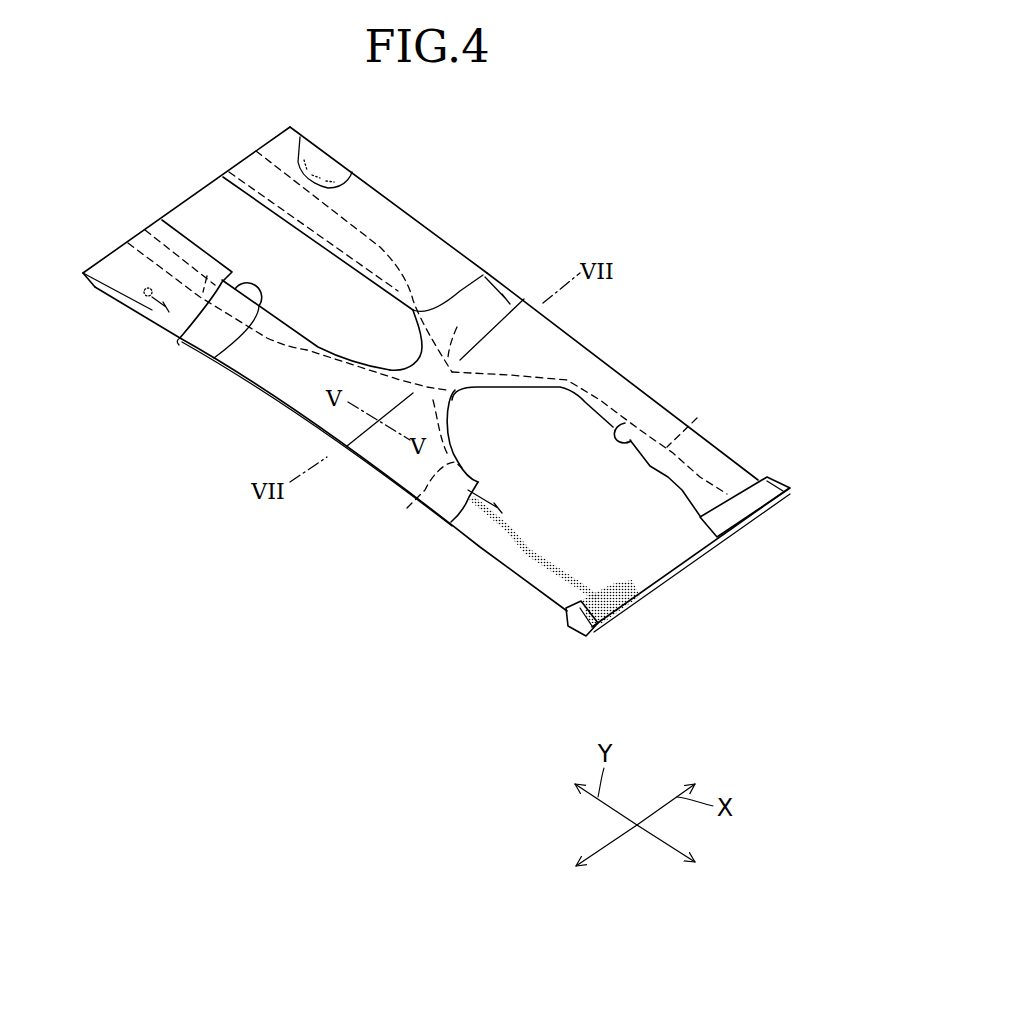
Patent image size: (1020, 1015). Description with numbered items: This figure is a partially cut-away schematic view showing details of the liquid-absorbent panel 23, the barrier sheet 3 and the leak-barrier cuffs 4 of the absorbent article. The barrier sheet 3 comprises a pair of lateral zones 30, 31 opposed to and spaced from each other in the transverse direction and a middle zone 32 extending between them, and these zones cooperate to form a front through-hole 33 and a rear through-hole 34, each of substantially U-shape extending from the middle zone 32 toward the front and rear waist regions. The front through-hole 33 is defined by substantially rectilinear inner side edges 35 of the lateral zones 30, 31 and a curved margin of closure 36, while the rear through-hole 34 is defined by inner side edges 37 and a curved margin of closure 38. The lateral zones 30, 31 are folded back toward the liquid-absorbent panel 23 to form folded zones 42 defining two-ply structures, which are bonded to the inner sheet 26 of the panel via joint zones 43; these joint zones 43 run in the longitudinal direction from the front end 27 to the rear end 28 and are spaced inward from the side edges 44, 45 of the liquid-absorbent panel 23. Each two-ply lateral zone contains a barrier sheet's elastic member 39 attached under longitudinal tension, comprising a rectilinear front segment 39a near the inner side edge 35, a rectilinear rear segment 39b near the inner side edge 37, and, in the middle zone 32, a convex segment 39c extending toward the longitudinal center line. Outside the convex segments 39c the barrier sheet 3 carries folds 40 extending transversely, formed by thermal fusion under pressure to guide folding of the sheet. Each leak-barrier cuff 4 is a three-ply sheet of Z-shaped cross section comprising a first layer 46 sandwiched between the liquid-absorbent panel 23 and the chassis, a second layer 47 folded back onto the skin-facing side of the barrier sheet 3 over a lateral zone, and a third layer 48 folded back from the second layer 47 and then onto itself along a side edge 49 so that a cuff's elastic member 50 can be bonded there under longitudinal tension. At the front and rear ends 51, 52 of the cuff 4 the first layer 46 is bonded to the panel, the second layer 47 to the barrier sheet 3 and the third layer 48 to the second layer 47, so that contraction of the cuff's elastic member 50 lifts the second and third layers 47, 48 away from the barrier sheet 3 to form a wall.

The barrier sheet 3 is at (295, 333).
The leak-barrier cuff 4 is at (260, 138).
The liquid-absorbent panel 23 is at (671, 602).
The inner sheet 26 is at (530, 573).
The front end 27 is at (737, 523).
The rear end 28 is at (250, 153).
The lateral zone 30 is at (236, 362).
The lateral zone 31 is at (564, 345).
The middle zone 32 is at (421, 385).
The front through-hole 33 is at (662, 532).
The rear through-hole 34 is at (218, 215).
The inner side edge 35 is at (620, 424).
The curved margin of closure 36 is at (507, 386).
The inner side edge 37 is at (213, 350).
The curved margin of closure 38 is at (420, 348).
The barrier sheet's elastic member 39 is at (295, 362).
The front segment 39a is at (697, 418).
The rear segment 39b is at (350, 208).
The convex segment 39c is at (417, 360).
The fold 40 is at (508, 316).
The folded zone 42 is at (460, 521).
The joint zone 43 is at (555, 575).
The side edge 44 is at (480, 547).
The side edge 45 is at (618, 378).
The first layer 46 is at (593, 638).
The second layer 47 is at (171, 333).
The third layer 48 is at (113, 265).
The side edge 49 is at (405, 217).
The cuff's elastic member 50 is at (343, 180).
The front end 51 is at (578, 621).
The rear end 52 is at (275, 143).